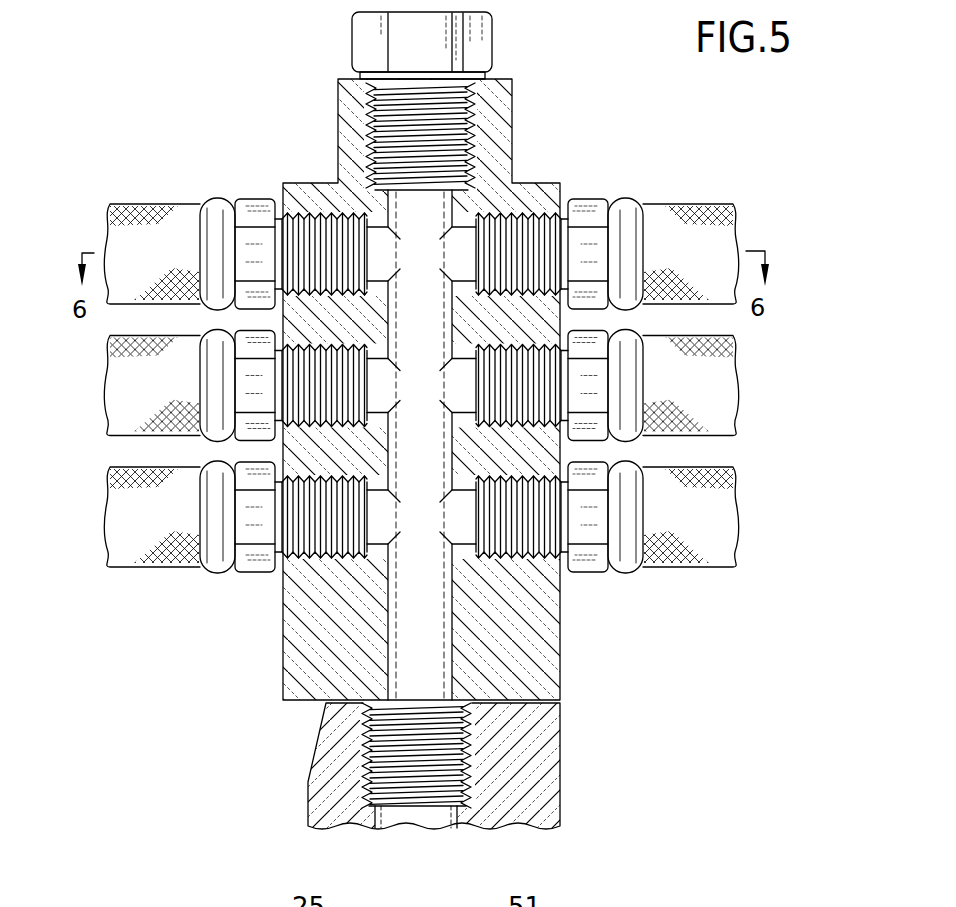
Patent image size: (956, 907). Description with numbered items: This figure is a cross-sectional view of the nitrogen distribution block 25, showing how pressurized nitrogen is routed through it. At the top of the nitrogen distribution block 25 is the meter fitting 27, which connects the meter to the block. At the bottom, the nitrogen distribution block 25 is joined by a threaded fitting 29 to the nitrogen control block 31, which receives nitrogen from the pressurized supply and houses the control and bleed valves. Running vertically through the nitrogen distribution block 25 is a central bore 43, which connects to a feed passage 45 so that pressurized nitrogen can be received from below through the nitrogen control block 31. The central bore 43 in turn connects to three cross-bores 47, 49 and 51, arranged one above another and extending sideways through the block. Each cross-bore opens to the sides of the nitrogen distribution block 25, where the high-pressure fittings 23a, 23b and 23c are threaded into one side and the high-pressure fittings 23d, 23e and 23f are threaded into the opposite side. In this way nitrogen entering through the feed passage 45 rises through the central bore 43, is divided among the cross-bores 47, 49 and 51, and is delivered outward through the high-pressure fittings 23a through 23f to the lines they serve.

The nitrogen distribution block 25 is at (512, 128).
The meter fitting 27 is at (350, 40).
The threaded fitting 29 is at (470, 776).
The nitrogen control block 31 is at (563, 804).
The central bore 43 is at (436, 638).
The feed passage 45 is at (422, 838).
The cross-bore 47 is at (421, 517).
The cross-bore 49 is at (421, 386).
The cross-bore 51 is at (421, 254).
The high-pressure fitting 23a is at (590, 566).
The high-pressure fitting 23b is at (590, 433).
The high-pressure fitting 23c is at (596, 197).
The high-pressure fitting 23d is at (250, 566).
The high-pressure fitting 23e is at (250, 433).
The high-pressure fitting 23f is at (252, 197).